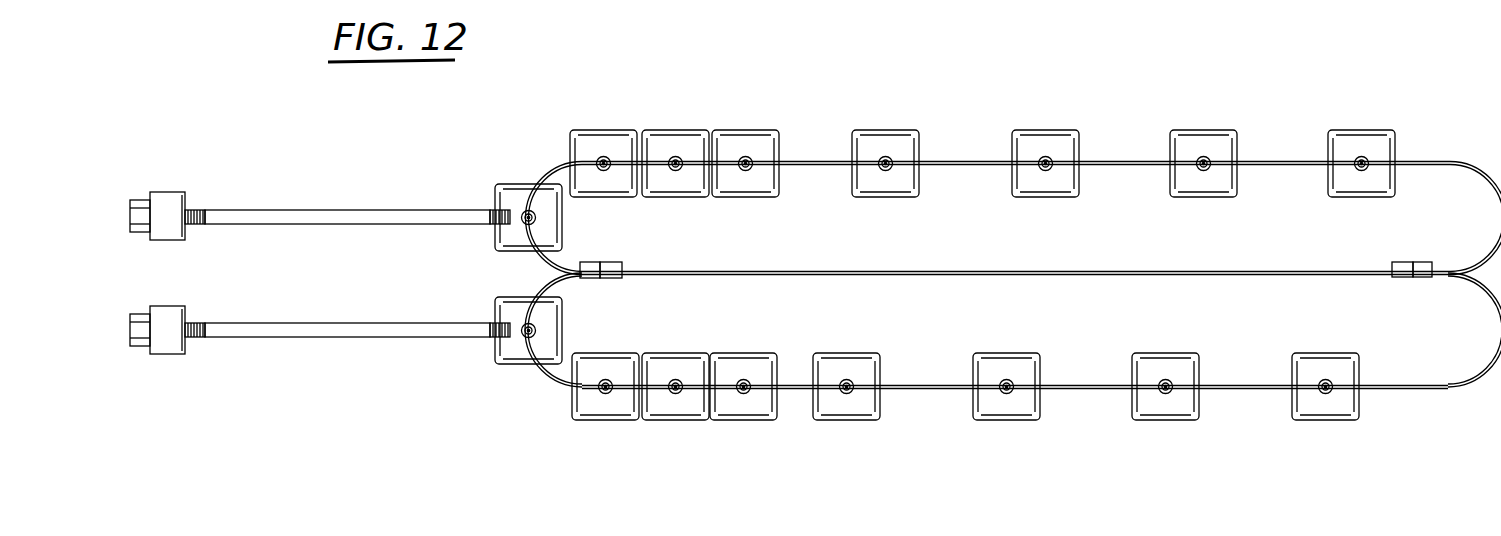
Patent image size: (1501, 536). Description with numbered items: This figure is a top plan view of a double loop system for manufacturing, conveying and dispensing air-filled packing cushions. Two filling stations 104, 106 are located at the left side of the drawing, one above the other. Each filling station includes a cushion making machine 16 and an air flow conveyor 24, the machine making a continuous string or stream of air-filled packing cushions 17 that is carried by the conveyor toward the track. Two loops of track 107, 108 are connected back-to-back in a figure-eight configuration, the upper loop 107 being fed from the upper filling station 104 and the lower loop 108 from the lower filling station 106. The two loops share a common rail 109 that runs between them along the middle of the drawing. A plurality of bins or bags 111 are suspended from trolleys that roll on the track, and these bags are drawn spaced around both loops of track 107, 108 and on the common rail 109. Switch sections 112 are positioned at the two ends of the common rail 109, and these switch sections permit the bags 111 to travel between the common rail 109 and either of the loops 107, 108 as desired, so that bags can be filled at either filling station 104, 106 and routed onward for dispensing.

The machine 16 is at (166, 197).
The air-filled packing cushions 17 is at (193, 226).
The air flow conveyor 24 is at (328, 226).
The filling station 104 is at (311, 180).
The filling station 106 is at (413, 367).
The loop of track 107 is at (978, 161).
The loop of track 108 is at (916, 370).
The common rail 109 is at (893, 271).
The bins or bags 111 is at (516, 192).
The switch sections 112 is at (605, 262).